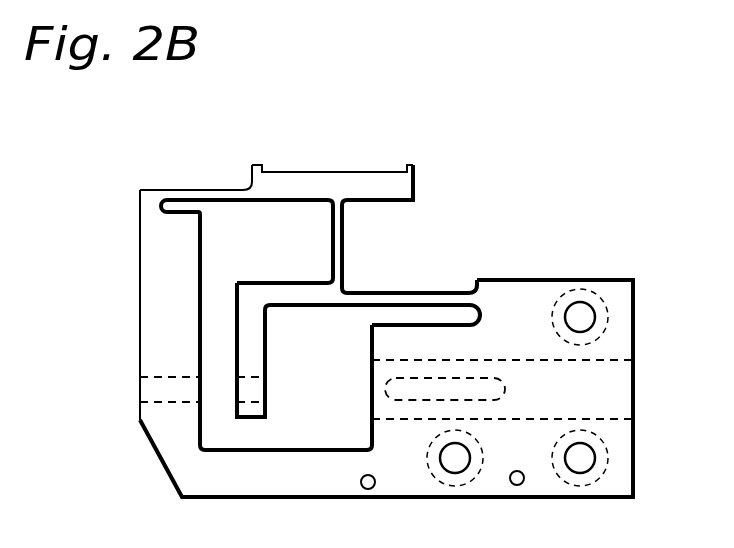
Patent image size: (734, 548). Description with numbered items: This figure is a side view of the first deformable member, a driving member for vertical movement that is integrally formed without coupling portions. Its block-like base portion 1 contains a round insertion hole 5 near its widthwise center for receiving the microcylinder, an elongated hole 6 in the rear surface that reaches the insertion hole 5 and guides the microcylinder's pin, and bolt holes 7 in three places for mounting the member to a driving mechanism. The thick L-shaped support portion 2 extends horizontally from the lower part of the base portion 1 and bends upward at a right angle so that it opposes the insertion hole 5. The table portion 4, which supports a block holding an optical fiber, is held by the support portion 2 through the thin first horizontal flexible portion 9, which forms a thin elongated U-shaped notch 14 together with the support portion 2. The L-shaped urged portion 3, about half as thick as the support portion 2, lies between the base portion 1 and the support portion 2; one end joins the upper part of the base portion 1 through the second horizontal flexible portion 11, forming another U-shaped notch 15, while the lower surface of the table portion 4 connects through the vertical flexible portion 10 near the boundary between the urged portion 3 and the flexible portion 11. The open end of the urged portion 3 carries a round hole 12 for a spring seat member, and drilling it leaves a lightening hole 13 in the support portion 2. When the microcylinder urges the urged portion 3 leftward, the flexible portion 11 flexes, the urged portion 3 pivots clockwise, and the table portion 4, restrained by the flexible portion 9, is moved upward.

The base portion 1 is at (517, 293).
The support portion 2 is at (150, 278).
The urged portion 3 is at (257, 300).
The table portion 4 is at (380, 170).
The insertion hole 5 is at (618, 396).
The elongated hole 6 is at (420, 392).
The bolt holes 7 is at (580, 305).
The first horizontal flexible portion 9 is at (213, 190).
The vertical flexible portion 10 is at (343, 250).
The second horizontal flexible portion 11 is at (437, 300).
The round hole 12 is at (265, 392).
The hole 13 is at (140, 385).
The U-shaped notch 14 is at (160, 200).
The U-shaped notch 15 is at (375, 313).